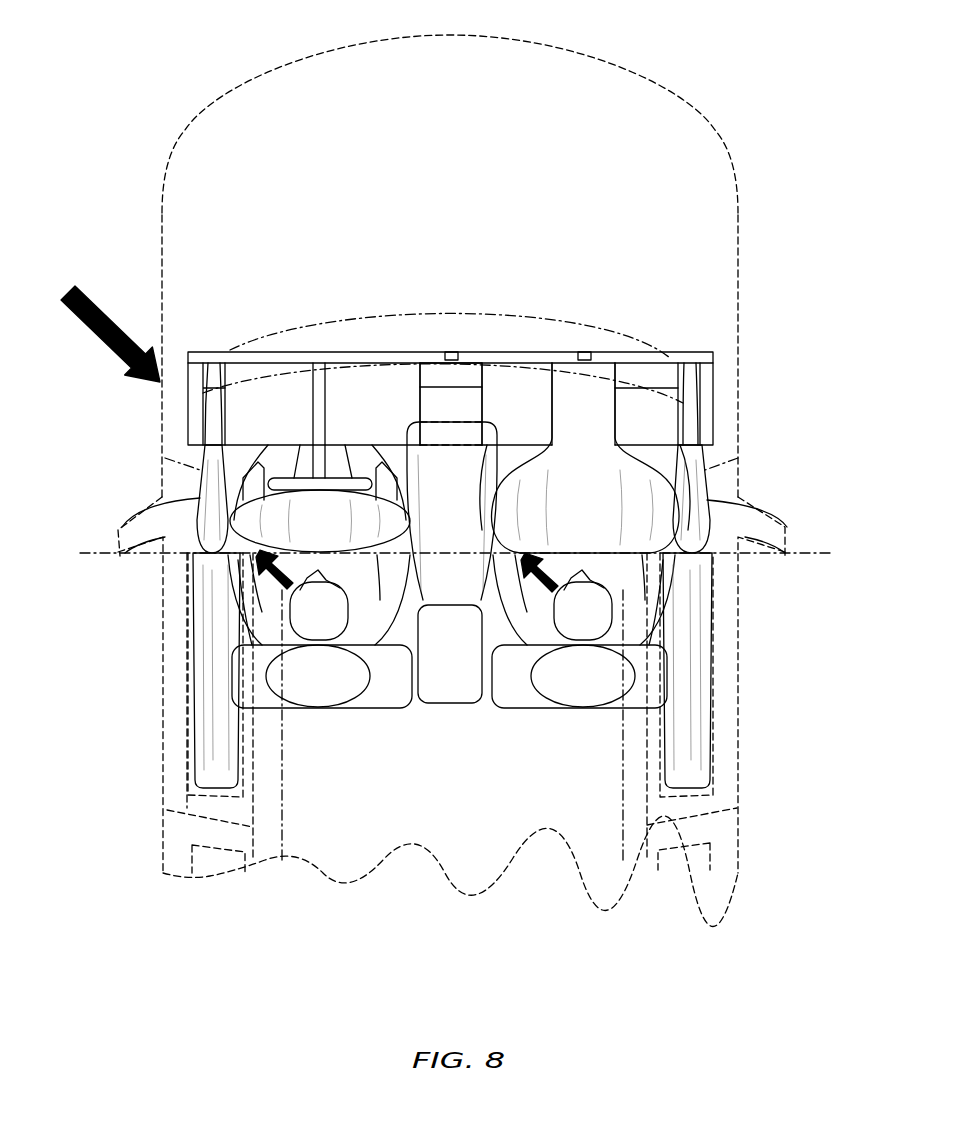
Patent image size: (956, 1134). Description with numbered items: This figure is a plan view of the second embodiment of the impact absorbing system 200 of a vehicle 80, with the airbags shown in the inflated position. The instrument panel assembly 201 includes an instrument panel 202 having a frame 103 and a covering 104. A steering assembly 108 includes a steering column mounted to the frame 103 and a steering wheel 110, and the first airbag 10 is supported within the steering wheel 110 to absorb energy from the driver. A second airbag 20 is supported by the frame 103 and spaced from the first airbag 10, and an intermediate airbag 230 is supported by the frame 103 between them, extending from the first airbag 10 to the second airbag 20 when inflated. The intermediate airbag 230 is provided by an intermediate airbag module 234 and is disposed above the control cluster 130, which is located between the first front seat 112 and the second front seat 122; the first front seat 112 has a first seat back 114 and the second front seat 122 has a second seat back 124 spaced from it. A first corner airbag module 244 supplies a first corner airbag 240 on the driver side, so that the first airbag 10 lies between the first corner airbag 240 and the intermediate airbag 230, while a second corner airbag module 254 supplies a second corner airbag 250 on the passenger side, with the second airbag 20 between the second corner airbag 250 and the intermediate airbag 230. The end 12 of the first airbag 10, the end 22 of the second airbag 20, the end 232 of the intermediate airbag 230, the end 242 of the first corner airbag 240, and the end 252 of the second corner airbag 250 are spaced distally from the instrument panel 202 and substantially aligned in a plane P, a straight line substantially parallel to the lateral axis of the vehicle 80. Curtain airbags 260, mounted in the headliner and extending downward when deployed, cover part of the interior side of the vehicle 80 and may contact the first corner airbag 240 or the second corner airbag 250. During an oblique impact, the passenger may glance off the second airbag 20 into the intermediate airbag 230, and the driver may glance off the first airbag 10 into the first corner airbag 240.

The impact absorbing system 200 is at (141, 71).
The vehicle 80 is at (323, 55).
The instrument panel assembly 201 is at (716, 420).
The frame 103 is at (205, 352).
The instrument panel 202 is at (187, 413).
The covering 104 is at (193, 433).
The first corner airbag module 244 is at (215, 375).
The second corner airbag module 254 is at (688, 375).
The steering wheel 110 is at (311, 411).
The steering assembly 108 is at (328, 422).
The first airbag 10 is at (342, 505).
The intermediate airbag module 234 is at (437, 380).
The intermediate airbag 230 is at (486, 400).
The control cluster 130 is at (492, 424).
The end of the intermediate airbag 232 is at (444, 705).
The second airbag 20 is at (648, 467).
The end of the first airbag 12 is at (343, 553).
The end of the second airbag 22 is at (555, 555).
The first seat back 114 is at (316, 708).
The second seat back 124 is at (588, 708).
The first front seat 112 is at (237, 680).
The second front seat 122 is at (680, 683).
The curtain airbags 260 is at (187, 752).
The first corner airbag 240 is at (185, 503).
The second corner airbag 250 is at (745, 512).
The end of the first corner airbag 242 is at (202, 557).
The end of the second corner airbag 252 is at (695, 557).
The plane P is at (805, 556).